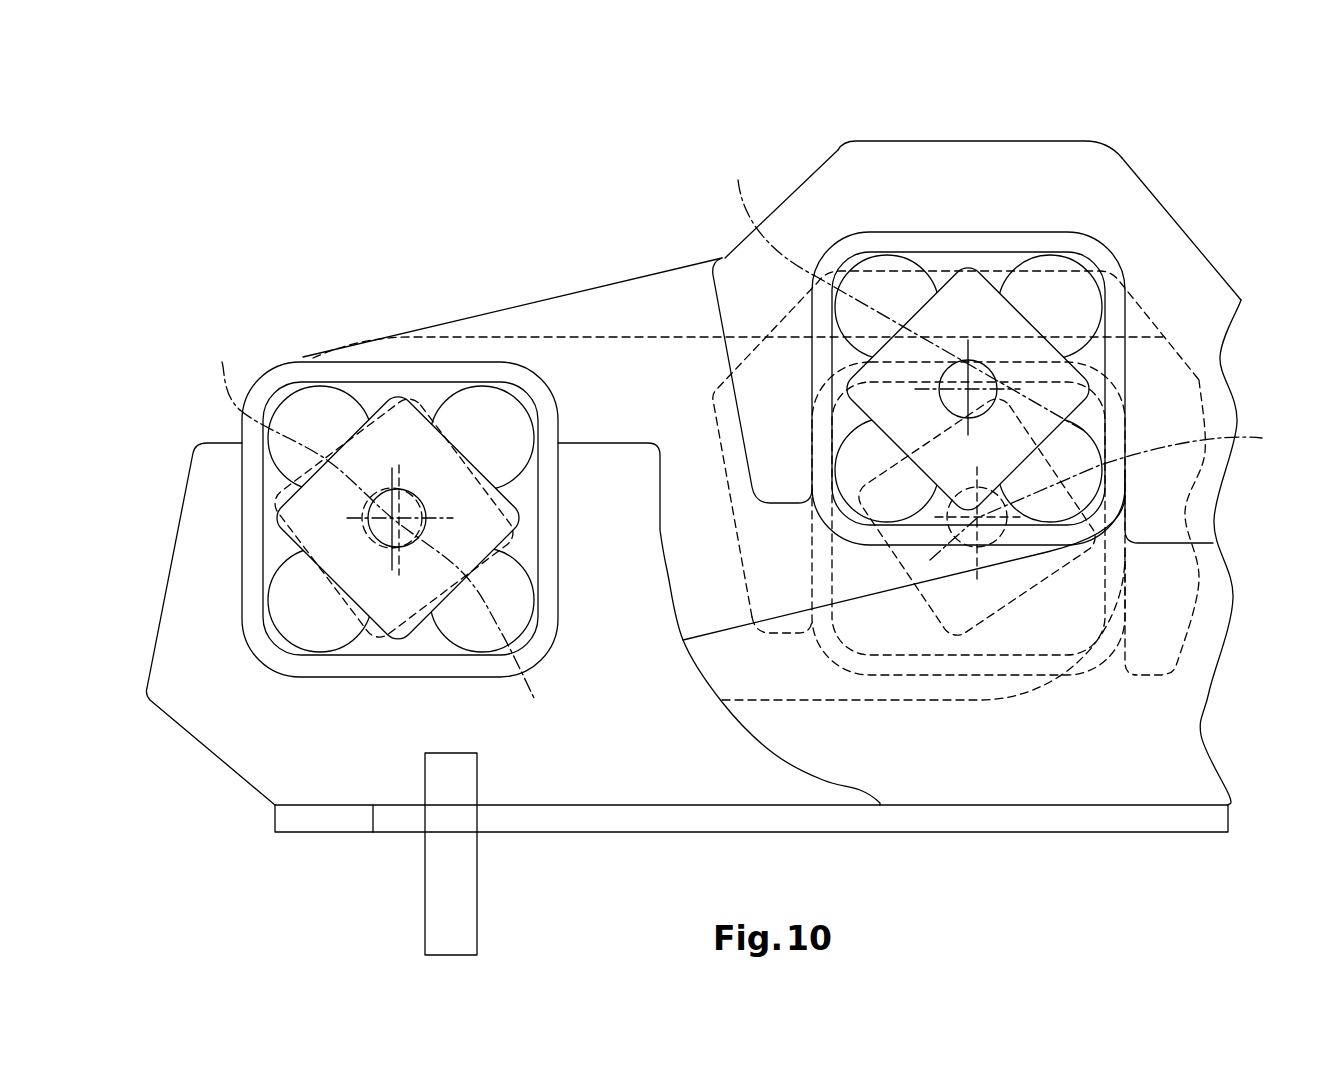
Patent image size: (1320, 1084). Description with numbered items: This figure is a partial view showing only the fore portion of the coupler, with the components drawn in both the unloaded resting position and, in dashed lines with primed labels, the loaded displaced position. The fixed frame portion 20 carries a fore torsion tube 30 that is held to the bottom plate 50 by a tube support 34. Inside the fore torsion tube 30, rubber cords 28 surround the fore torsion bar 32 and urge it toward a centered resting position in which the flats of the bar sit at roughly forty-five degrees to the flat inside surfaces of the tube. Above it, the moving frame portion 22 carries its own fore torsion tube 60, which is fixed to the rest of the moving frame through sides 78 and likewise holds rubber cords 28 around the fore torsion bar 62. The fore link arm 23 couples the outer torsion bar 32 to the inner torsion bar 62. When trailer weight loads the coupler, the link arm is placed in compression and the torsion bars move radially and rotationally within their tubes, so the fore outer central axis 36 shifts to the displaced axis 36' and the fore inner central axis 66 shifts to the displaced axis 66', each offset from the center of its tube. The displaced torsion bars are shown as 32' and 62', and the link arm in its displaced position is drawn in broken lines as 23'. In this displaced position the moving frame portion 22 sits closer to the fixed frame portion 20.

The fixed frame portion 20 is at (1173, 798).
The moving frame portion 22 is at (1212, 219).
The fore link arms 23 is at (714, 411).
The fore link arm in displaced position 23' is at (739, 455).
The rubber cords 28 is at (297, 605).
The fore torsion tube 30 is at (303, 372).
The fore torsion bar 32 is at (398, 450).
The fore torsion bar in displaced position 32' is at (301, 518).
The tube support 34 is at (257, 748).
The fore outer central axis 36 is at (396, 581).
The displaced fore outer axis of rotation 36' is at (215, 367).
The bottom plate 50 is at (1042, 835).
The fore torsion tube 60 is at (1017, 243).
The fore torsion bar 62 is at (968, 306).
The fore inner torsion bar in displaced position 62' is at (1083, 521).
The fore inner central axis 66 is at (901, 290).
The displaced fore inner axis of rotation 66' is at (1118, 491).
The sides 78 is at (960, 168).